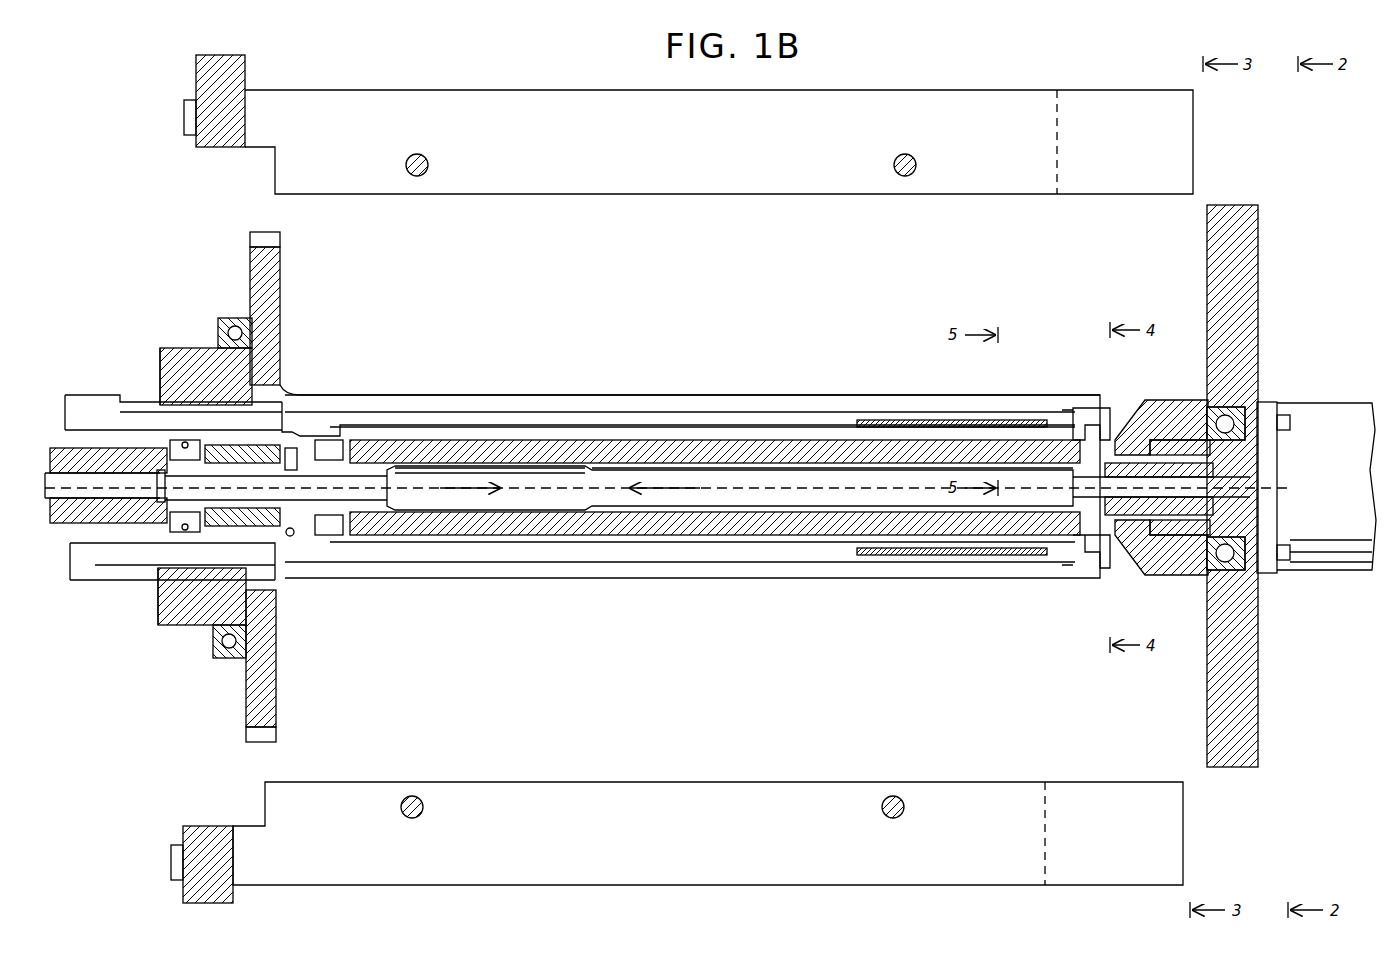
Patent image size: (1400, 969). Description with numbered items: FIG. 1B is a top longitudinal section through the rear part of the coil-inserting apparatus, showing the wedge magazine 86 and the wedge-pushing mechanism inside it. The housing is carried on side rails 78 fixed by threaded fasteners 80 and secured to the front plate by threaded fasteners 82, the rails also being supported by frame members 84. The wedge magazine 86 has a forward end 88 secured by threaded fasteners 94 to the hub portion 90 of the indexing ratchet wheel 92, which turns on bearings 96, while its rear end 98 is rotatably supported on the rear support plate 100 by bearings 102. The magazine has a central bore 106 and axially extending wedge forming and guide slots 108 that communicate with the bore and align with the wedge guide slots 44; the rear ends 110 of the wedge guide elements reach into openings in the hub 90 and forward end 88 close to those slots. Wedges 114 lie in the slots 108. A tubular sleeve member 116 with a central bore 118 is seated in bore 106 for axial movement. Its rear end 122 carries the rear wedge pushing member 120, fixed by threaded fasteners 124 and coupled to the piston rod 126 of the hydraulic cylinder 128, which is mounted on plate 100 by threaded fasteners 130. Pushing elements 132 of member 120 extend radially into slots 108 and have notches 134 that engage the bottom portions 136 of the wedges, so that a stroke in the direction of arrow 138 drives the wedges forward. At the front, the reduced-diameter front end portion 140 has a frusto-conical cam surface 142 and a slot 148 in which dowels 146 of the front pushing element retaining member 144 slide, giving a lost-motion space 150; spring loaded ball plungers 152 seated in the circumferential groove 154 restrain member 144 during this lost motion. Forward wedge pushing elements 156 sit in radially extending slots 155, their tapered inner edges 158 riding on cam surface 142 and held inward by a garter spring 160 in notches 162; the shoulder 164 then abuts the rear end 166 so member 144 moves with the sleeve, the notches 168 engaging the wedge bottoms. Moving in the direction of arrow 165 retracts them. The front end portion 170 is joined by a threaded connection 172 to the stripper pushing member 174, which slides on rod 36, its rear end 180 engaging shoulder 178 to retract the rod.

The rod 36 is at (102, 485).
The wedge guide slots 44 is at (85, 415).
The side rails 78 is at (878, 103).
The threaded fasteners 80 is at (210, 78).
The threaded fasteners 82 is at (184, 120).
The frame members 84 is at (1085, 800).
The wedge magazine 86 is at (748, 388).
The forward end 88 is at (292, 390).
The hub portion 90 is at (185, 352).
The indexing ratchet wheel 92 is at (272, 285).
The threaded fasteners 94 is at (158, 358).
The bearings 96 is at (233, 318).
The rear end 98 is at (1245, 450).
The rear support plate 100 is at (1250, 290).
The bearings 102 is at (1245, 410).
The central bore 106 is at (780, 538).
The wedge forming and guide slots 108 is at (640, 422).
The rear ends 110 is at (298, 420).
The wedges 114 is at (952, 420).
The tubular sleeve member 116 is at (665, 515).
The central bore 118 is at (667, 488).
The rear wedge pushing member 120 is at (1085, 545).
The rear end 122 is at (1060, 535).
The threaded fasteners 124 is at (1040, 465).
The piston rod 126 is at (1161, 489).
The hydraulic cylinder 128 is at (1370, 415).
The threaded fasteners 130 is at (1292, 425).
The pushing elements 132 is at (1088, 417).
The notches 134 is at (1066, 415).
The bottom portions 136 is at (1010, 420).
The arrow 138 is at (660, 489).
The reduced-diameter front end portion 140 is at (320, 525).
The frusto-conical cam surface 142 is at (269, 489).
The front pushing element retaining member 144 is at (305, 530).
The dowels 146 is at (309, 473).
The slot 148 is at (362, 489).
The lost-motion space 150 is at (338, 438).
The spring loaded ball plungers 152 is at (290, 540).
The circumferential groove 154 is at (320, 444).
The radially extending slots 155 is at (215, 450).
The forward wedge pushing elements 156 is at (175, 515).
The tapered inner edges 158 is at (190, 493).
The garter spring 160 is at (195, 428).
The notches 162 is at (200, 530).
The shoulder 164 is at (345, 515).
The arrow 165 is at (480, 505).
The rear end 166 is at (333, 520).
The notches 168 is at (178, 445).
The front end portion 170 is at (130, 520).
The threaded connection 172 is at (110, 525).
The stripper pushing member 174 is at (75, 507).
The shoulder 178 is at (157, 487).
The rear end 180 is at (100, 450).